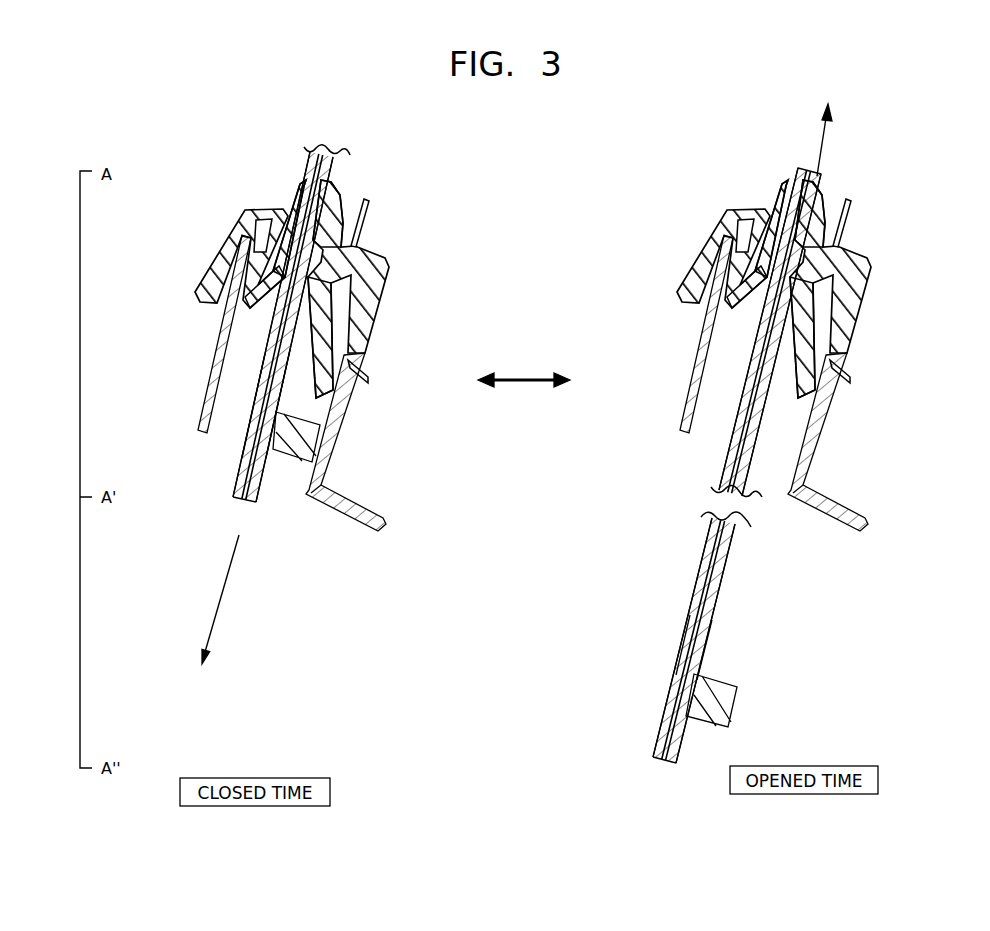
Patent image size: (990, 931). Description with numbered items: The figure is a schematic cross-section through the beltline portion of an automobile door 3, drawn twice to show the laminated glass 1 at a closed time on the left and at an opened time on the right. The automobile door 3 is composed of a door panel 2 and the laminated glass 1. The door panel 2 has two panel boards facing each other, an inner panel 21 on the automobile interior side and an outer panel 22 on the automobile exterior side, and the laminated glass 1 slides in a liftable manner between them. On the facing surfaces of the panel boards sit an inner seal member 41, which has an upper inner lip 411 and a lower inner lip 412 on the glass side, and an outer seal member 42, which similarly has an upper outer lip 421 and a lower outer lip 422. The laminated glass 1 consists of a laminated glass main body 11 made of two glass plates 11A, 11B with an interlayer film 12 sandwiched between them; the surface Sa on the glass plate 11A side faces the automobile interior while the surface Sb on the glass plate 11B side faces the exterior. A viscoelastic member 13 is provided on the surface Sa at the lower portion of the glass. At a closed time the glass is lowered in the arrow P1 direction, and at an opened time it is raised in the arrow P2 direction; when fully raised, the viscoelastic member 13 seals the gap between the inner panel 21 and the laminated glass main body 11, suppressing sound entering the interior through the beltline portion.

The laminated glass 1 is at (495, 454).
The laminated glass main body 11 is at (265, 397).
The glass plate 11A is at (258, 508).
The glass plate 11B is at (232, 494).
The interlayer film 12 is at (241, 505).
The viscoelastic member 13 is at (289, 440).
The surface Sa is at (263, 482).
The surface Sb is at (255, 433).
The door panel 2 is at (490, 383).
The inner panel 21 is at (340, 491).
The outer panel 22 is at (214, 372).
The automobile door 3 is at (567, 259).
The inner seal member 41 is at (372, 300).
The upper inner lip 411 is at (344, 211).
The lower inner lip 412 is at (318, 312).
The outer seal member 42 is at (236, 258).
The upper outer lip 421 is at (298, 205).
The lower outer lip 422 is at (260, 327).
The arrow P1 direction P1 is at (227, 599).
The arrow P2 direction P2 is at (833, 140).